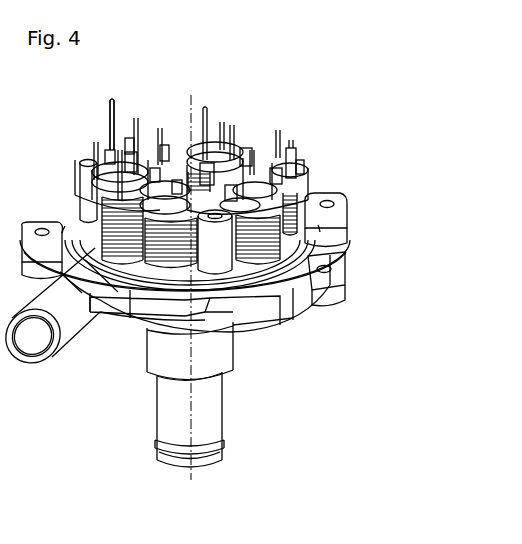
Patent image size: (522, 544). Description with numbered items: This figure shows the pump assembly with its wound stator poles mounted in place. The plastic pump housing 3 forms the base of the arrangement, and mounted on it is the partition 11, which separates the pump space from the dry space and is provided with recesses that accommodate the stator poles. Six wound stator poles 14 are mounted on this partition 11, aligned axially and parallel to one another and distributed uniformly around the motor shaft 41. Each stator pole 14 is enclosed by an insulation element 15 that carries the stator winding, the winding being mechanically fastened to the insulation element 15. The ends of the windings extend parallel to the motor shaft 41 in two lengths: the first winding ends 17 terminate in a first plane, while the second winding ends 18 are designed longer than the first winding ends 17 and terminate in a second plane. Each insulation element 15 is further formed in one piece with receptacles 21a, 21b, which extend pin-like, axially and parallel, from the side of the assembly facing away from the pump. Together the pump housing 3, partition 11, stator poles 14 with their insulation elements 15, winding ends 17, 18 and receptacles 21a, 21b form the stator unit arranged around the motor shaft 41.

The pump housing 3 is at (252, 337).
The partition 11 is at (263, 306).
The stator pole 14 is at (158, 126).
The insulation element 15 is at (293, 157).
The first winding end 17 is at (206, 122).
The second winding end 18 is at (112, 110).
The receptacle 21a is at (165, 148).
The receptacle 21b is at (128, 134).
The motor shaft 41 is at (192, 470).